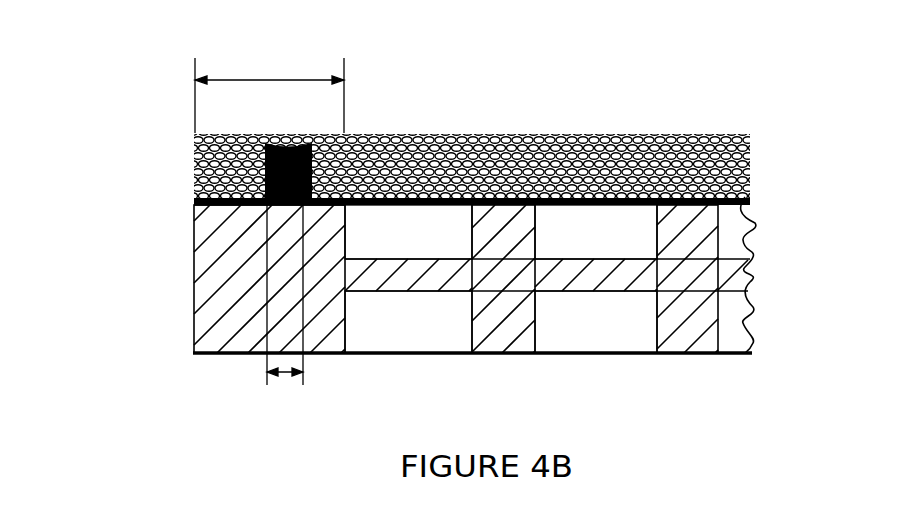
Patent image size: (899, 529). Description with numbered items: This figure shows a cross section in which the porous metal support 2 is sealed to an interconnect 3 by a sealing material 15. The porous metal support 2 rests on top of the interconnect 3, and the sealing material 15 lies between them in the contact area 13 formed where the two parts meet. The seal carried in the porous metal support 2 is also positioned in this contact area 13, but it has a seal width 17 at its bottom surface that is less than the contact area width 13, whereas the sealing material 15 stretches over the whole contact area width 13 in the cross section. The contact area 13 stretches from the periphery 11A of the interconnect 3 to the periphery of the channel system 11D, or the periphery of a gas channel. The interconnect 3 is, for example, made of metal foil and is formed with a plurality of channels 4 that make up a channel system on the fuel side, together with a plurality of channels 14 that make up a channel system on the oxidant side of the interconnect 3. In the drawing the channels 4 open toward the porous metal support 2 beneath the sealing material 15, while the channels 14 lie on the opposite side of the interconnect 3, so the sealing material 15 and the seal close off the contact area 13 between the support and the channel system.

The porous metal support 2 is at (755, 153).
The interconnect 3 is at (220, 270).
The channels 4 is at (590, 218).
The periphery of the interconnect 11A is at (193, 245).
The periphery of the channel system 11D is at (374, 148).
The contact area 13 is at (233, 80).
The channels 14 is at (372, 315).
The sealing material 15 is at (193, 202).
The seal width 17 is at (283, 372).